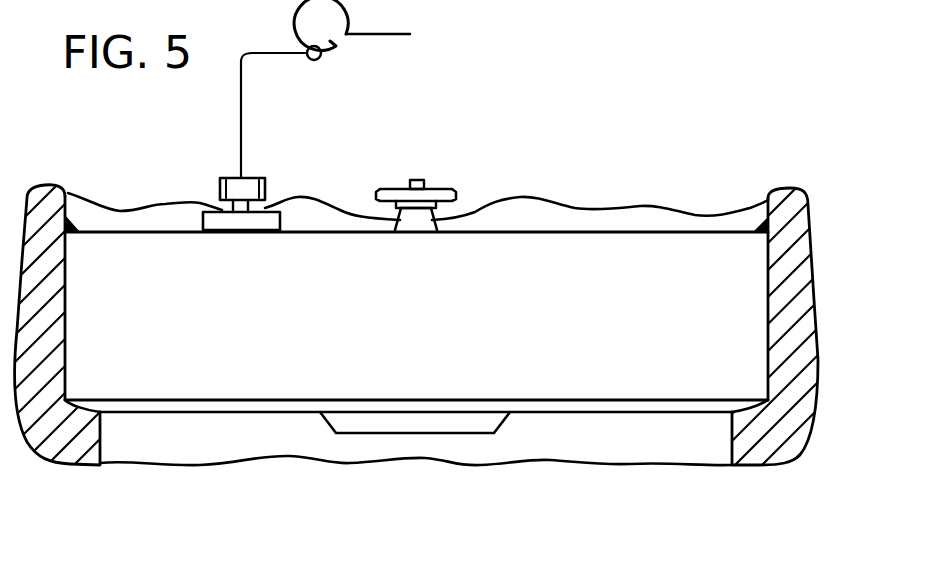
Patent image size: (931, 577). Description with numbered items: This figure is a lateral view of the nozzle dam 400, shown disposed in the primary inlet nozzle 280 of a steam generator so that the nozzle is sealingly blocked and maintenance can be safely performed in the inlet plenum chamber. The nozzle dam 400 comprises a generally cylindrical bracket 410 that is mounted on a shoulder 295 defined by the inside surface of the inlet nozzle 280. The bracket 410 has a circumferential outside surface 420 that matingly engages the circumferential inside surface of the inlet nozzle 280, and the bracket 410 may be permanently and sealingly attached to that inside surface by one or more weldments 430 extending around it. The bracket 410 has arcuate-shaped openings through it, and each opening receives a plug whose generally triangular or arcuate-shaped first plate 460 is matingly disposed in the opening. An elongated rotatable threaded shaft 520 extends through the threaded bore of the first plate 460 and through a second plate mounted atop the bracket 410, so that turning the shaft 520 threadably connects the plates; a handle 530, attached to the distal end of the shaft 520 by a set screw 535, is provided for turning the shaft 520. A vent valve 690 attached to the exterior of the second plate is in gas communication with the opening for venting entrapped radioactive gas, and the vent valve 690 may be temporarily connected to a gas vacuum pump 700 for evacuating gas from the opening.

The primary inlet nozzle 280 is at (60, 452).
The shoulder 295 is at (727, 417).
The nozzle dam 400 is at (535, 160).
The bracket 410 is at (625, 248).
The circumferential outside surface 420 is at (777, 452).
The weldment 430 is at (766, 226).
The first plate 460 is at (365, 422).
The threaded shaft 520 is at (412, 222).
The handle 530 is at (449, 191).
The set screw 535 is at (415, 181).
The vent valve 690 is at (229, 178).
The gas vacuum pump 700 is at (326, 68).